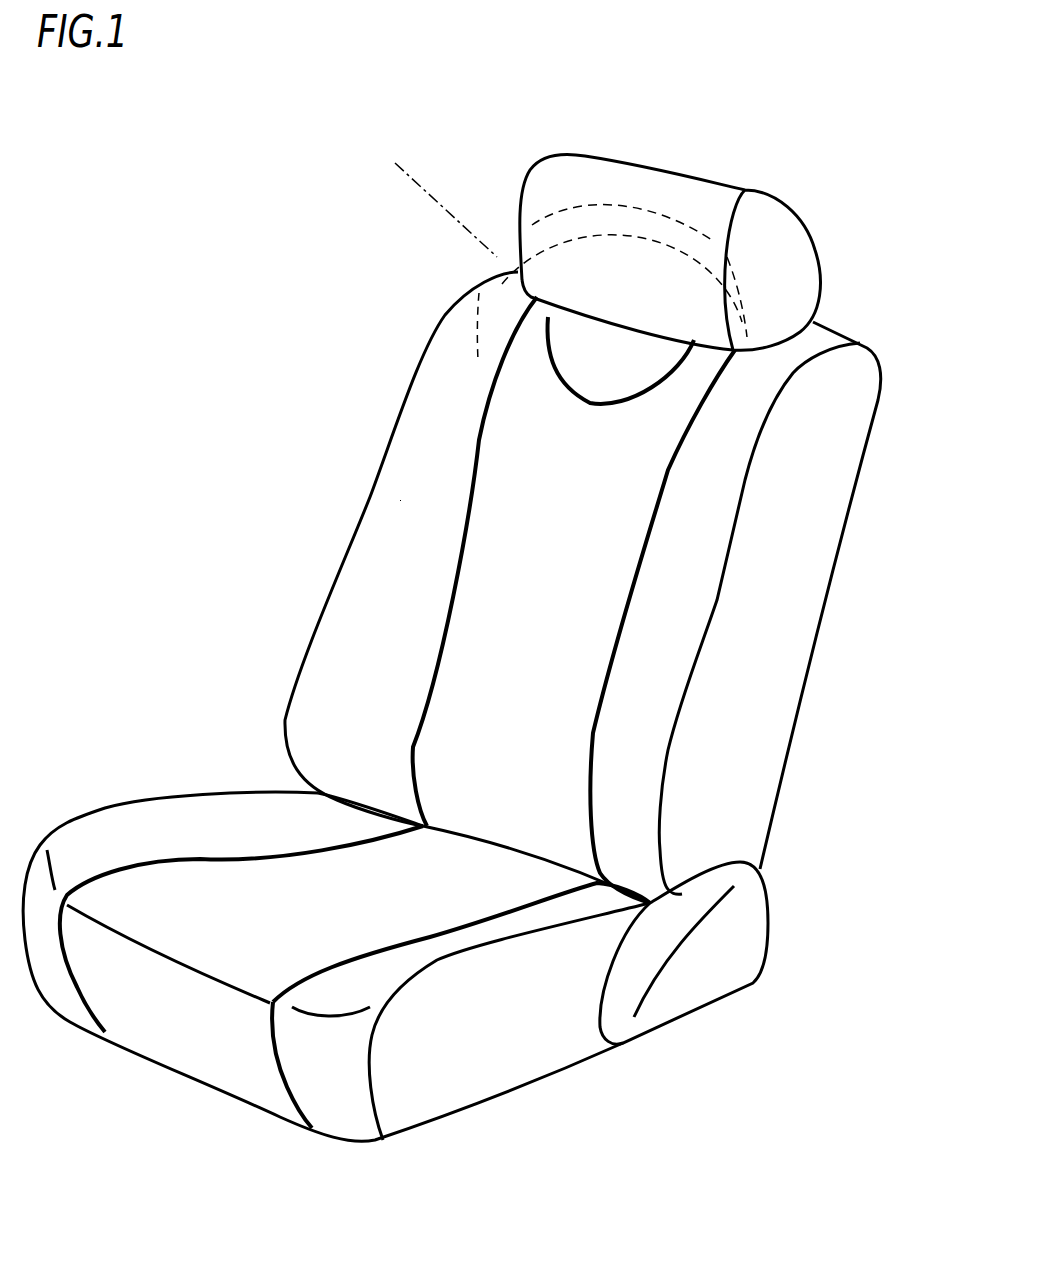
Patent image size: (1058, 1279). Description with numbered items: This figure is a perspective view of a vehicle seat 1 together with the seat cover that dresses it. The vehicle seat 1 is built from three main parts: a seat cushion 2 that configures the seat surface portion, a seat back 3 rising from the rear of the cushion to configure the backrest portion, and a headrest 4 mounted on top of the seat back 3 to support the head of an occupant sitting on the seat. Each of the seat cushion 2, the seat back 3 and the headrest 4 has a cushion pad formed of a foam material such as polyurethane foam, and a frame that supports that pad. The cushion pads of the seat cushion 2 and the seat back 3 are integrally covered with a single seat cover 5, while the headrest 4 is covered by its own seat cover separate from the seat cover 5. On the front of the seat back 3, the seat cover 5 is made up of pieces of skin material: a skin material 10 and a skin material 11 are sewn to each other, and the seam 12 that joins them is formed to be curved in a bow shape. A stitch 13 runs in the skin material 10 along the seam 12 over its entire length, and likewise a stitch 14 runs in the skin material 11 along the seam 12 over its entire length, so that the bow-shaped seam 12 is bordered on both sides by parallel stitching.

The vehicle seat 1 is at (98, 164).
The seat cushion 2 is at (588, 1090).
The seat back 3 is at (858, 562).
The headrest 4 is at (715, 180).
The seat cover 5 is at (300, 287).
The skin material 10 is at (577, 340).
The skin material 11 is at (493, 610).
The seam 12 is at (555, 407).
The stitch 13 is at (548, 368).
The stitch 14 is at (515, 449).